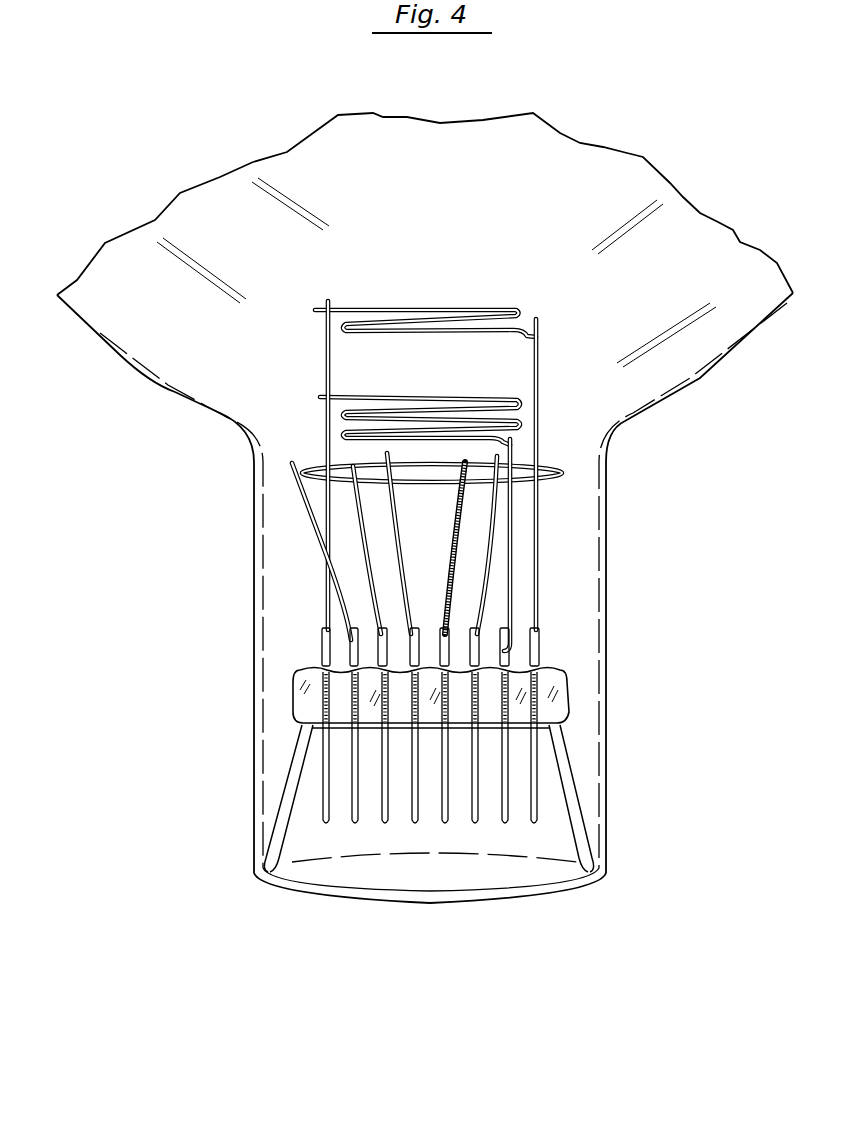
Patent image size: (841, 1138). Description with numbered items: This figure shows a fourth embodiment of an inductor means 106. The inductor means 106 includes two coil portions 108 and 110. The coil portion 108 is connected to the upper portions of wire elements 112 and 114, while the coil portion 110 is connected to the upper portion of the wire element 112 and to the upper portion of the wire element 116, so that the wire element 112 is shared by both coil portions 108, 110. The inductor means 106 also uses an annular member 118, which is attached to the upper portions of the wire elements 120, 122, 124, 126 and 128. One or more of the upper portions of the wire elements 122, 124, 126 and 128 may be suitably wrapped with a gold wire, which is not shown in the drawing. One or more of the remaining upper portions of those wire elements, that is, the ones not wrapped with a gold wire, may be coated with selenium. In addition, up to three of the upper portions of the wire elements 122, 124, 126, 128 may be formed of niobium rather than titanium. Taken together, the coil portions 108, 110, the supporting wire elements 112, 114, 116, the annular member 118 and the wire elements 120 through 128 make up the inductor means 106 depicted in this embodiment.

The inductor means 106 is at (658, 616).
The coil portion 108 is at (450, 306).
The coil portion 110 is at (503, 368).
The wire element 112 is at (322, 655).
The wire element 114 is at (534, 663).
The wire element 116 is at (508, 656).
The annular member 118 is at (566, 468).
The wire element 120 is at (352, 650).
The wire element 122 is at (393, 637).
The wire element 124 is at (422, 645).
The wire element 126 is at (443, 652).
The wire element 128 is at (478, 646).